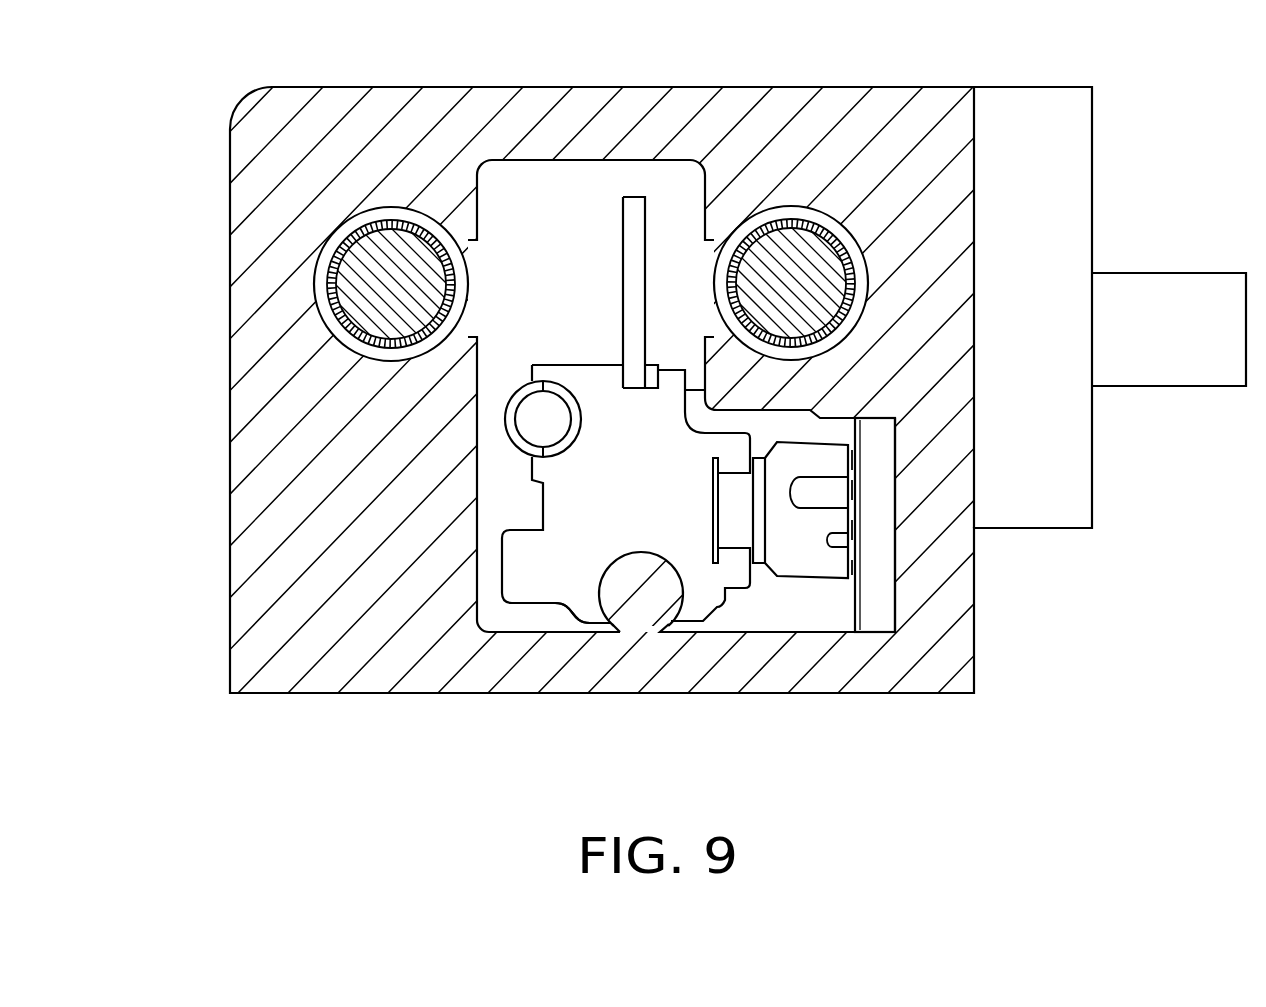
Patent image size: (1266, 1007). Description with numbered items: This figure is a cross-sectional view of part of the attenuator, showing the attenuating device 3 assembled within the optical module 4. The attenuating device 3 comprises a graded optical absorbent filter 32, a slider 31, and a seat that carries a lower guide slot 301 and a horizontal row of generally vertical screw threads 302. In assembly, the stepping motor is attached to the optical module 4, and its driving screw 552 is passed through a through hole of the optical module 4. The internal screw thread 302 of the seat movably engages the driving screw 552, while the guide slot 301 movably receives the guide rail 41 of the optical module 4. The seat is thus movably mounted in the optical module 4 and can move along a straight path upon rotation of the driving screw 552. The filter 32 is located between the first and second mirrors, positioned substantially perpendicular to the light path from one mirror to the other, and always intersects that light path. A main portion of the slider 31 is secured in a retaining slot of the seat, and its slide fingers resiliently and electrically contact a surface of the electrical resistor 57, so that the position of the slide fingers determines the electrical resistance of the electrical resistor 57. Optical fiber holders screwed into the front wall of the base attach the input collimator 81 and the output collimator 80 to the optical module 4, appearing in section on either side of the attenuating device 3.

The optical module 4 is at (857, 122).
The output collimator 80 is at (377, 300).
The input collimator 81 is at (803, 283).
The attenuating device 3 is at (545, 575).
The graded optical absorbent filter 32 is at (633, 213).
The screw threads 302 is at (548, 383).
The driving screw 552 is at (535, 430).
The lower guide slot 301 is at (668, 570).
The guide rail 41 is at (648, 610).
The slider 31 is at (803, 552).
The electrical resistor 57 is at (878, 610).